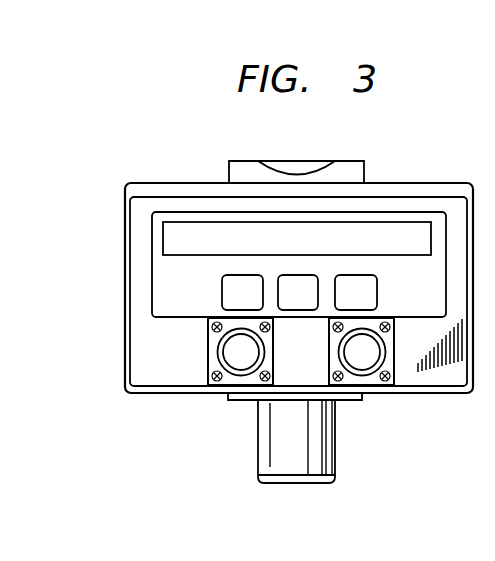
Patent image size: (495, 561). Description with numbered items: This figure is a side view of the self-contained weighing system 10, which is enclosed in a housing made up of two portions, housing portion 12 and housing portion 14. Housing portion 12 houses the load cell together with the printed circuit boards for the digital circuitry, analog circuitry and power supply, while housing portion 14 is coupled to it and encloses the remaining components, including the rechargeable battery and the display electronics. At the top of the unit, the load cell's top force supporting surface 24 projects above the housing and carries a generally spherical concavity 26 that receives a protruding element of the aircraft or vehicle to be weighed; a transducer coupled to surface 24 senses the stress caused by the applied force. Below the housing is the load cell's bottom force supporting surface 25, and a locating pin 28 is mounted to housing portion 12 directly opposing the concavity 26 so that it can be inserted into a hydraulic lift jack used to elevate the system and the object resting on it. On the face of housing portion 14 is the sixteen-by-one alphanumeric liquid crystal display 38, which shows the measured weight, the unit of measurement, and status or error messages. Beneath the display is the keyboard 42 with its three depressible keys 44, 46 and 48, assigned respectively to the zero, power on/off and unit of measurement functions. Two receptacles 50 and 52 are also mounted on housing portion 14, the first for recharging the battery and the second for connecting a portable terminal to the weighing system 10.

The self-contained weighing system 10 is at (134, 423).
The housing portion 12 is at (125, 185).
The housing portion 14 is at (132, 258).
The top force supporting surface 24 is at (335, 162).
The bottom force supporting surface 25 is at (242, 400).
The concavity 26 is at (271, 162).
The locating pin 28 is at (332, 455).
The alphanumeric liquid crystal display 38 is at (397, 248).
The keyboard 42 is at (191, 290).
The depressible key 44 is at (367, 302).
The depressible key 46 is at (309, 302).
The depressible key 48 is at (253, 302).
The receptacle 50 is at (380, 385).
The receptacle 52 is at (226, 392).